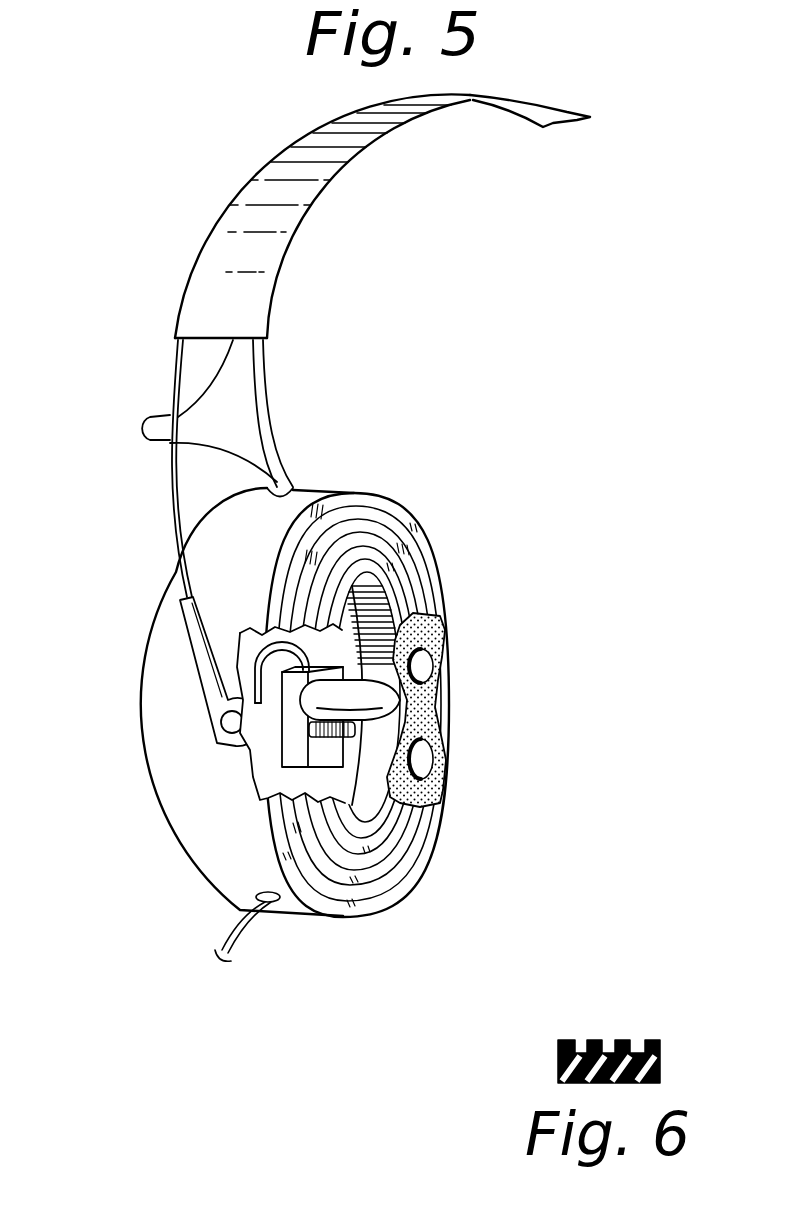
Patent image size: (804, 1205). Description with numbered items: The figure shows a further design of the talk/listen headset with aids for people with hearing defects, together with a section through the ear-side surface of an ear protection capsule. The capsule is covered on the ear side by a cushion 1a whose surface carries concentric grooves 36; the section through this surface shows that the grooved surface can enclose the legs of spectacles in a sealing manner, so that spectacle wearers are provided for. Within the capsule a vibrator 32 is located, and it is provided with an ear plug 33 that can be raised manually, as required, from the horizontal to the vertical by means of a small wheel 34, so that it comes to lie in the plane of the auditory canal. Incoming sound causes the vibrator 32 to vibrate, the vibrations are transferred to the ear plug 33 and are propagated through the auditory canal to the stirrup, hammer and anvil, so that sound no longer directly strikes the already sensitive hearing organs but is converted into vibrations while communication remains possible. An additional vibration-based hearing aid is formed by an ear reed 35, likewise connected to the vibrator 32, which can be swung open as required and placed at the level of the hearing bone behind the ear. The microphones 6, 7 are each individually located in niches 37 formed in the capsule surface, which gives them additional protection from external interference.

In FIG. 5, the cushion 1a is at (327, 887).
In FIG. 5, the concentric grooves 36 is at (370, 523).
In FIG. 6, the concentric grooves 36 is at (660, 1057).
In FIG. 5, the microphone 6 is at (423, 667).
In FIG. 5, the microphone 7 is at (425, 765).
In FIG. 5, the vibrator 32 is at (292, 735).
In FIG. 5, the ear plug 33 is at (399, 702).
In FIG. 5, the small wheel 34 is at (313, 733).
In FIG. 5, the ear reed 35 is at (257, 668).
In FIG. 5, the niche 37 is at (430, 803).